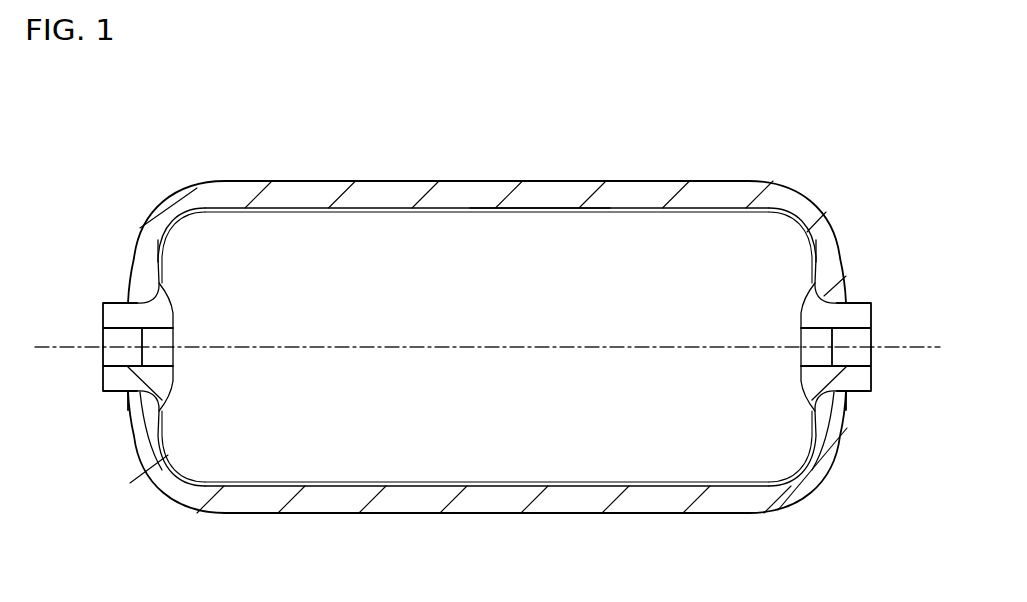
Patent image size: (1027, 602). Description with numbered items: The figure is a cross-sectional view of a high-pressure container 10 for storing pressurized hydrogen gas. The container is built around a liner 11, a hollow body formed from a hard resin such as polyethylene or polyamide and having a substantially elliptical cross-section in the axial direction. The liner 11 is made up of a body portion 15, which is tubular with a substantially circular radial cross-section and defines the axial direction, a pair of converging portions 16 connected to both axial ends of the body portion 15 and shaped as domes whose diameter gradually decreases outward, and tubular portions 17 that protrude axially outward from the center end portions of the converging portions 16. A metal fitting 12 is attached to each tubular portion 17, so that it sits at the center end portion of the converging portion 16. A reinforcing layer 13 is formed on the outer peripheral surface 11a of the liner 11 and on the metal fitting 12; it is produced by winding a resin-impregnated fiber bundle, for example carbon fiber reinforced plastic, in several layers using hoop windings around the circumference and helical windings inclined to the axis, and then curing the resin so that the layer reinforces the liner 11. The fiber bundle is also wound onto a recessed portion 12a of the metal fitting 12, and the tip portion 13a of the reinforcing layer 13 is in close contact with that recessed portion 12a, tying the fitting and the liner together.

The high-pressure container 10 is at (163, 134).
The liner 11 is at (622, 193).
The outer peripheral surface 11a is at (540, 208).
The metal fitting 12 is at (146, 325).
The recessed portion 12a is at (162, 456).
The reinforcing layer 13 is at (300, 190).
The tip portion 13a is at (140, 397).
The body portion 15 is at (428, 212).
The converging portion 16 is at (163, 243).
The tubular portion 17 is at (128, 368).